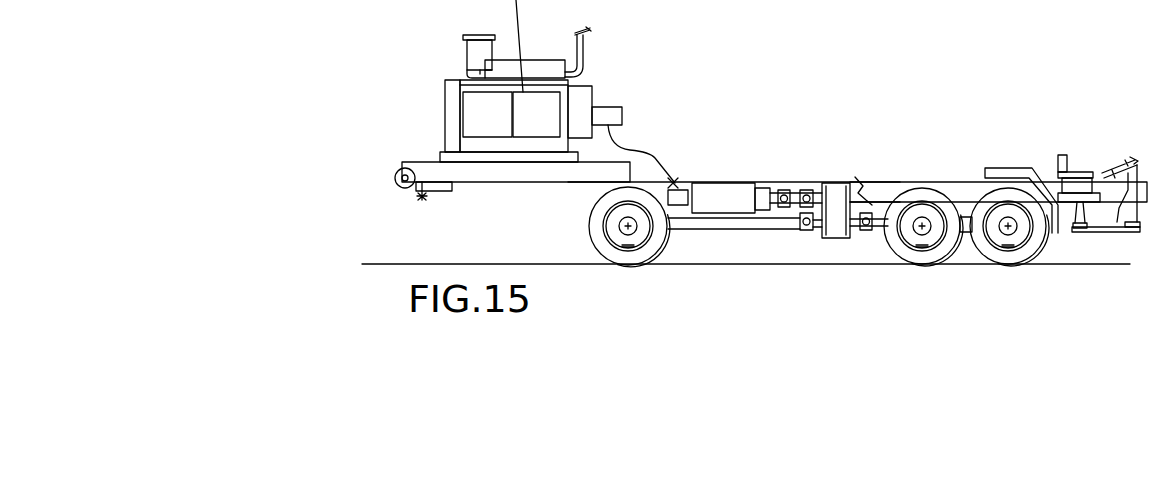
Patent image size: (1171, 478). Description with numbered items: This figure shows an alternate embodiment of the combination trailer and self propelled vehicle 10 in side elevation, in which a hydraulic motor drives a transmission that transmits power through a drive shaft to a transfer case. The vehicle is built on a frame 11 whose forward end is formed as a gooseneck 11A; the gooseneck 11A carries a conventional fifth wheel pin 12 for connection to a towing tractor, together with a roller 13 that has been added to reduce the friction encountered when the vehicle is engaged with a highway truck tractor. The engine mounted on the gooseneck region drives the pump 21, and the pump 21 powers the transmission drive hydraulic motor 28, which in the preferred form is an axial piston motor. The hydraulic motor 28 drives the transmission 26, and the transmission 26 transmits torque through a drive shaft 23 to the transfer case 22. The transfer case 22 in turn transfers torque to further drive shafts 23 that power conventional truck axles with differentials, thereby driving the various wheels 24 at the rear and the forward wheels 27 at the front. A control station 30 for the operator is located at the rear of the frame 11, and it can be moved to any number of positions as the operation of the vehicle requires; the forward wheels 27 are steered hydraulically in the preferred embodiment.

The combination trailer and self propelled vehicle 10 is at (958, 188).
The frame 11 is at (882, 188).
The gooseneck 11A is at (432, 173).
The fifth wheel pin 12 is at (425, 199).
The roller 13 is at (397, 177).
The pump 21 is at (608, 110).
The transfer case 22 is at (837, 225).
The drive shaft 23 is at (797, 190).
The wheels 24 is at (1010, 255).
The transmission 26 is at (728, 190).
The forward wheels 27 is at (623, 258).
The transmission drive hydraulic motor 28 is at (680, 190).
The control station 30 is at (1110, 232).